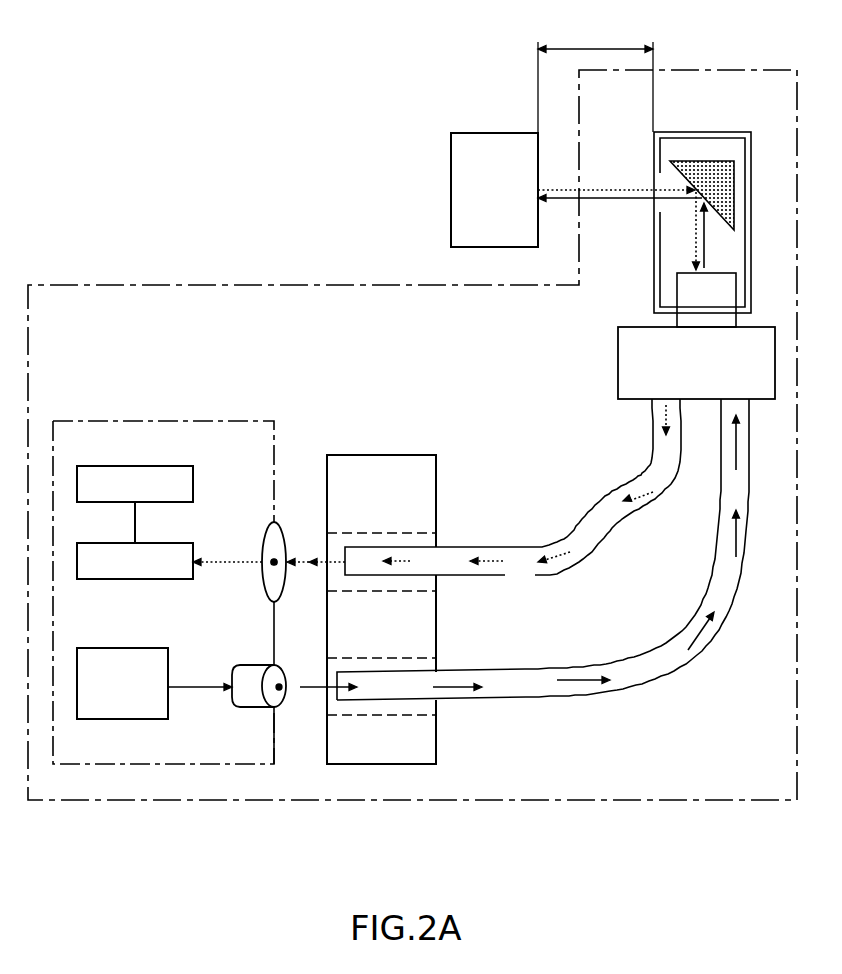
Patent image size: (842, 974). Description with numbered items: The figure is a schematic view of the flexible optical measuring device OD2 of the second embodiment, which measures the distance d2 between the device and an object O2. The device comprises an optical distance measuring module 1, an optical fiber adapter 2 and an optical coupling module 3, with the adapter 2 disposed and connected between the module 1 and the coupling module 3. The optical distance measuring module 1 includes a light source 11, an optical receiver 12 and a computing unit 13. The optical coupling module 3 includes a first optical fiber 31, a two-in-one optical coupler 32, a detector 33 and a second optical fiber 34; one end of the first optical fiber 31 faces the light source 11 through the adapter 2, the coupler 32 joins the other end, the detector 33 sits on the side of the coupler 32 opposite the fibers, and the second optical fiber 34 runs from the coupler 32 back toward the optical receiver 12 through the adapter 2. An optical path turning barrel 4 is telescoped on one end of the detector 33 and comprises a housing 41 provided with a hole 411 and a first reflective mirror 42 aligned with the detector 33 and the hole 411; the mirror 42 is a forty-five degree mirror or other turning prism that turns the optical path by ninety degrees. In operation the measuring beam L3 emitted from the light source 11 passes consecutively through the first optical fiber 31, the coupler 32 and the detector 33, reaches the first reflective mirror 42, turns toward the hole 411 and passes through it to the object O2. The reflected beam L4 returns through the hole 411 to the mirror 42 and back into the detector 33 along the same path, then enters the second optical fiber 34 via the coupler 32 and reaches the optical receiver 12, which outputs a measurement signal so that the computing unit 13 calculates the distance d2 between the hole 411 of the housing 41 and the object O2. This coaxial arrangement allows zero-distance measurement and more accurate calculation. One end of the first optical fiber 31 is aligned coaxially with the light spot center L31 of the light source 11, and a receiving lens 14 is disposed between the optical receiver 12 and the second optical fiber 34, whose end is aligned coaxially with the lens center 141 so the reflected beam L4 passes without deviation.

The flexible optical measuring device OD2 is at (160, 207).
The distance d2 is at (595, 79).
The object O2 is at (492, 132).
The optical distance measuring module 1 is at (100, 421).
The light source 11 is at (135, 648).
The optical receiver 12 is at (108, 543).
The computing unit 13 is at (163, 466).
The receiving lens 14 is at (283, 540).
The lens center 141 is at (277, 566).
The light spot center L31 is at (283, 690).
The optical fiber adapter 2 is at (383, 455).
The optical coupling module 3 is at (563, 500).
The first optical fiber 31 is at (527, 690).
The two-in-one optical coupler 32 is at (630, 362).
The detector 33 is at (722, 292).
The second optical fiber 34 is at (598, 516).
The optical path turning barrel 4 is at (699, 202).
The housing 41 is at (699, 202).
The hole 411 is at (656, 176).
The first reflective mirror 42 is at (724, 186).
The measuring beam L3 is at (574, 680).
The reflected beam L4 is at (497, 533).